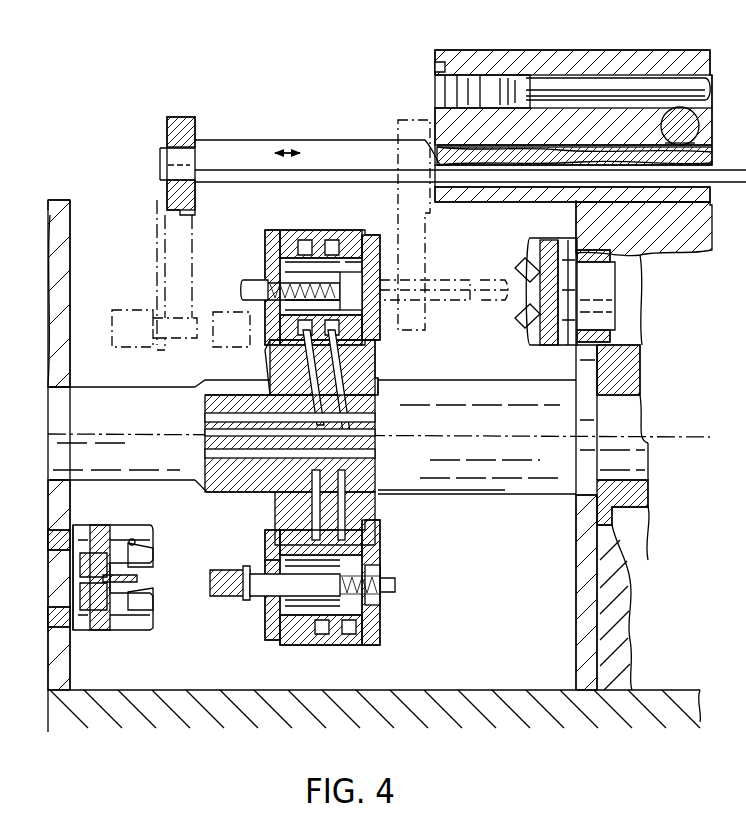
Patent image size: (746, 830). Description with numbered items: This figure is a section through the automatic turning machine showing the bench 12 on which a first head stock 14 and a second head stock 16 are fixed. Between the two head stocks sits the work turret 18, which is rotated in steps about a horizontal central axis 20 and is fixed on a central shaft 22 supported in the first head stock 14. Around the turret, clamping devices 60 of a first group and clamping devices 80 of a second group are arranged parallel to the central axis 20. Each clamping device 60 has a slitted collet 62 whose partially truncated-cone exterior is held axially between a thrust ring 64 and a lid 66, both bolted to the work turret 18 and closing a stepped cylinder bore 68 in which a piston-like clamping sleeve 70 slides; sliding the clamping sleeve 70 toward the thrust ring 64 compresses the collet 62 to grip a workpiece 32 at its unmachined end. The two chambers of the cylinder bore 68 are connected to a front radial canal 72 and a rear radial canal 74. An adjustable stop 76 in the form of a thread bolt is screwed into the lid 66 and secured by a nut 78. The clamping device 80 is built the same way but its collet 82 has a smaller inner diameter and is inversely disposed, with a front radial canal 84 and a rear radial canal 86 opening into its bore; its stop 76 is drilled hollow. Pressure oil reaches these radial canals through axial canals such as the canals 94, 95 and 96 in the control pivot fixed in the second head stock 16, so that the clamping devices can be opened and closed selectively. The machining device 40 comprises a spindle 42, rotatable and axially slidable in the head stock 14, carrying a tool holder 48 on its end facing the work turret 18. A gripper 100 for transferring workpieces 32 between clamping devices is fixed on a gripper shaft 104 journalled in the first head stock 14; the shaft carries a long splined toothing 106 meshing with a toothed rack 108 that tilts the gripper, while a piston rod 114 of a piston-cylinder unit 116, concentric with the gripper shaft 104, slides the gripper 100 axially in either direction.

The gripper 100 is at (147, 178).
The gripper shaft 104 is at (240, 156).
The clamping device 60 is at (385, 225).
The piston-cylinder unit 116 is at (522, 50).
The toothing 106 is at (588, 147).
The piston rod 114 is at (640, 88).
The toothed rack 108 is at (690, 108).
The tool holder 48 is at (556, 240).
The spindle 42 is at (598, 280).
The machining device 40 is at (620, 297).
The collet 62 is at (385, 262).
The thrust ring 64 is at (385, 325).
The lid 66 is at (268, 232).
The stepped cylinder bore 68 is at (305, 242).
The clamping sleeve 70 is at (330, 242).
The adjustable stop 76 is at (285, 280).
The nut 78 is at (245, 290).
The rear radial canal 74 is at (270, 372).
The front radial canal 72 is at (345, 383).
The central axis 20 is at (528, 438).
The axial canal 95 is at (206, 415).
The axial canal 94 is at (206, 433).
The axial canal 96 is at (206, 454).
The front radial canal 84 is at (308, 505).
The collet 82 is at (272, 566).
The rear radial canal 86 is at (342, 500).
The work turret 18 is at (438, 518).
The central shaft 22 is at (505, 490).
The workpiece 32 is at (248, 594).
The clamping device 80 is at (270, 648).
The first head stock 14 is at (598, 630).
The bench 12 is at (498, 700).
The second head stock 16 is at (52, 673).